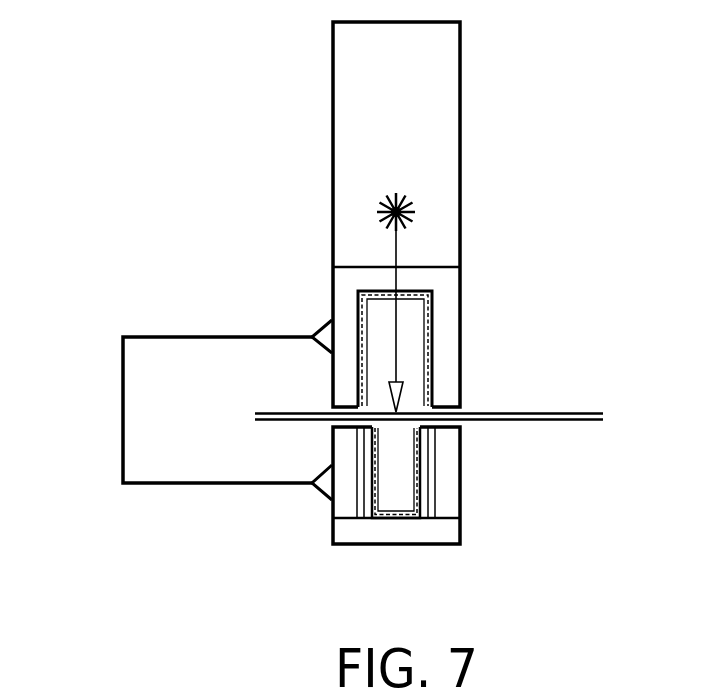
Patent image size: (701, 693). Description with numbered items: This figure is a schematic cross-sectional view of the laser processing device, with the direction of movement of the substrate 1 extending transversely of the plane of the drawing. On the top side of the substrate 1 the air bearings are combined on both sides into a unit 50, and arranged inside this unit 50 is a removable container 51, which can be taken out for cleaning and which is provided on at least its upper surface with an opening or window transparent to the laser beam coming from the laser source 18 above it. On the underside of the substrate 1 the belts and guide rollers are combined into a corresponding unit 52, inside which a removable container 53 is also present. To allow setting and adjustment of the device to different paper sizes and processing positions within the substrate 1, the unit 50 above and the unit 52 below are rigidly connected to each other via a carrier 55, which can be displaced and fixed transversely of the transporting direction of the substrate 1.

The substrate 1 is at (580, 412).
The laser source 18 is at (423, 212).
The unit 50 is at (448, 323).
The removable container 51 is at (432, 375).
The unit 52 is at (448, 483).
The removable container 53 is at (398, 518).
The carrier 55 is at (121, 410).